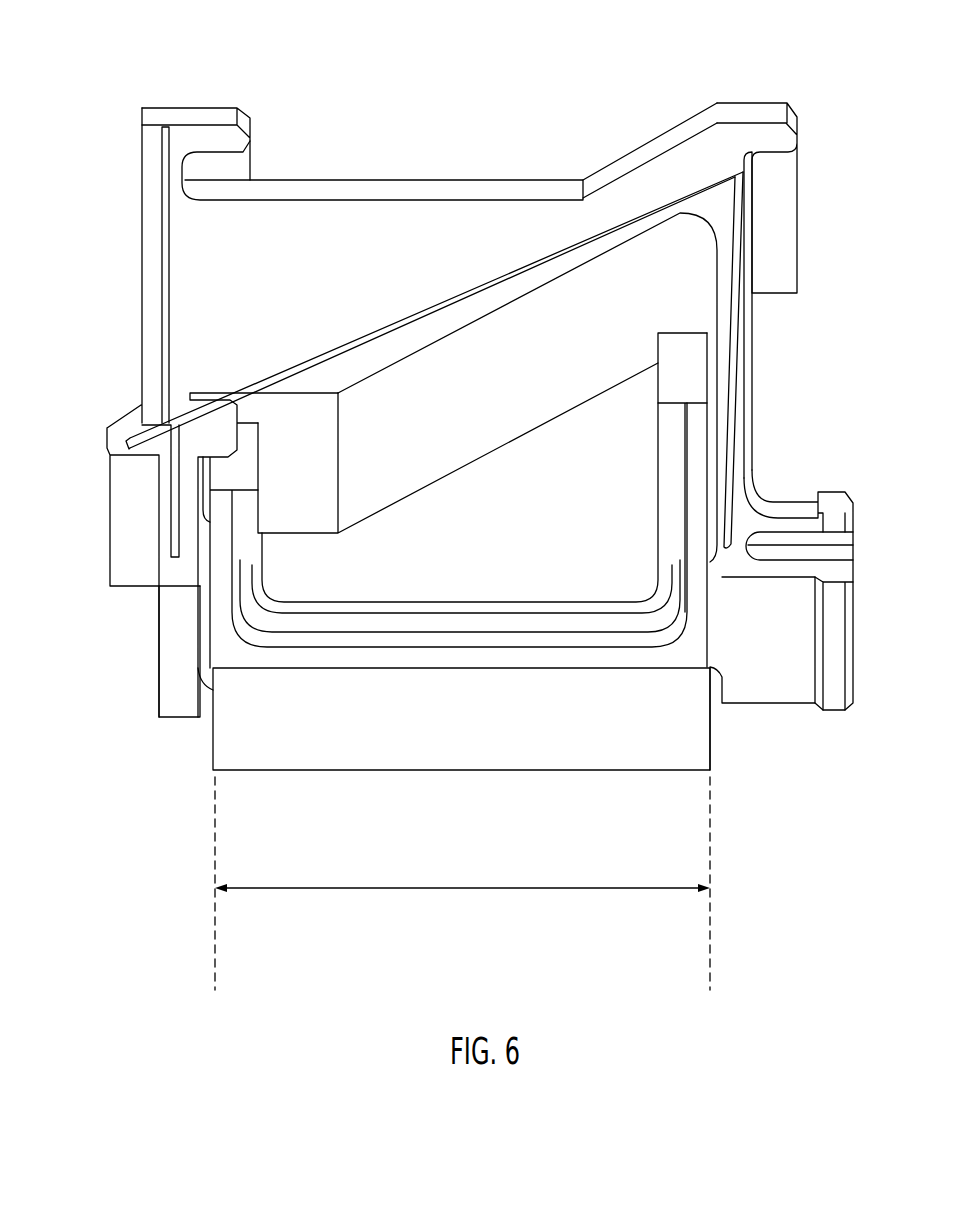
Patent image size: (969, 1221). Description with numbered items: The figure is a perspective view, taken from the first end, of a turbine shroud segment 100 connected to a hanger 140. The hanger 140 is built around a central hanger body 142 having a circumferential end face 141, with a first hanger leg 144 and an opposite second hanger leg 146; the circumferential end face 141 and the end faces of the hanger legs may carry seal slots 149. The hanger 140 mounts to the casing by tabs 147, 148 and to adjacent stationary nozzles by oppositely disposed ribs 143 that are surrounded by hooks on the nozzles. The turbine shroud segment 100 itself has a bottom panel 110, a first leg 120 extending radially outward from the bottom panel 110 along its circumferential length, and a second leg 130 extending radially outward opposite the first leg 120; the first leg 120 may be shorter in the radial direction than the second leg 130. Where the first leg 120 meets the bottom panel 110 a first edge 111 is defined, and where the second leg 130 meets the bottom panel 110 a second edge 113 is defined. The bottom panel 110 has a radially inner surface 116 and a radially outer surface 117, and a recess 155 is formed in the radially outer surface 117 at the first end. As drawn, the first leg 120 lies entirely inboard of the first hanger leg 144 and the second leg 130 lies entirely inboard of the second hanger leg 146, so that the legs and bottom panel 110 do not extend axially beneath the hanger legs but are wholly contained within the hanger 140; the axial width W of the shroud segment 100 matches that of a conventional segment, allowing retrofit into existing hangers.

The turbine shroud segment 100 is at (166, 742).
The bottom panel 110 is at (500, 592).
The first edge 111 is at (210, 738).
The second edge 113 is at (714, 733).
The radially inner surface 116 is at (477, 727).
The radially outer surface 117 is at (413, 603).
The first leg 120 is at (268, 568).
The second leg 130 is at (648, 503).
The hanger 140 is at (112, 142).
The circumferential end face 141 is at (345, 232).
The central hanger body 142 is at (468, 168).
The rib 143 is at (787, 503).
The first hanger leg 144 is at (138, 257).
The second hanger leg 146 is at (750, 348).
The tab 147 is at (200, 115).
The tab 148 is at (752, 104).
The seal slot 149 is at (170, 443).
The recess 155 is at (518, 606).